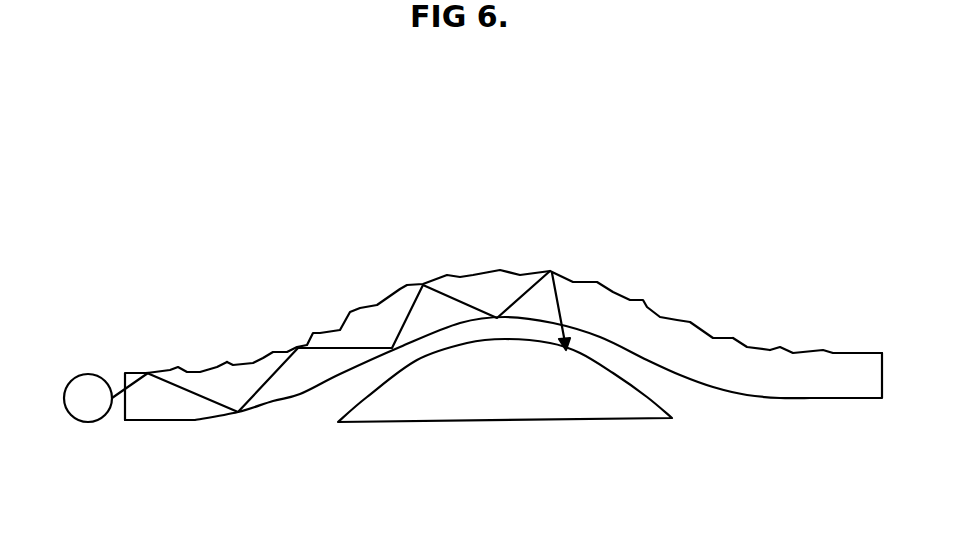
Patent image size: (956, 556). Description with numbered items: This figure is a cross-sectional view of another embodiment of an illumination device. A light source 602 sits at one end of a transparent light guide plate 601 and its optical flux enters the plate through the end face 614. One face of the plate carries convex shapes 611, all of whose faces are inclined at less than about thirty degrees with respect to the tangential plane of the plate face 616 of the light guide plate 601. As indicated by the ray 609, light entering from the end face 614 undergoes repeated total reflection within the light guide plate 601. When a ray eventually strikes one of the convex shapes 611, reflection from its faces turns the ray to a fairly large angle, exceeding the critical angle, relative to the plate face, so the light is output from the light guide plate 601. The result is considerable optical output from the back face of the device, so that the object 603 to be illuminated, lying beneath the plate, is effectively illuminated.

The light guide plate 601 is at (660, 337).
The light source 602 is at (88, 410).
The object to be illuminated 603 is at (540, 400).
The ray 609 is at (343, 347).
The convex shapes 611 is at (740, 340).
The end face 614 is at (125, 385).
The plate face 616 is at (758, 347).